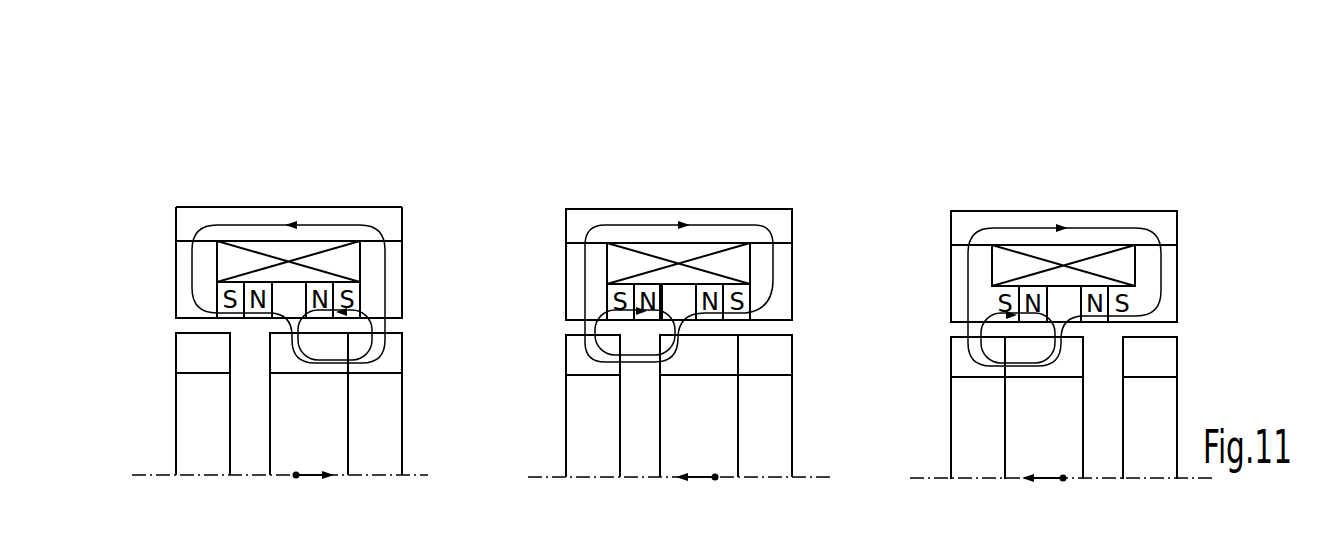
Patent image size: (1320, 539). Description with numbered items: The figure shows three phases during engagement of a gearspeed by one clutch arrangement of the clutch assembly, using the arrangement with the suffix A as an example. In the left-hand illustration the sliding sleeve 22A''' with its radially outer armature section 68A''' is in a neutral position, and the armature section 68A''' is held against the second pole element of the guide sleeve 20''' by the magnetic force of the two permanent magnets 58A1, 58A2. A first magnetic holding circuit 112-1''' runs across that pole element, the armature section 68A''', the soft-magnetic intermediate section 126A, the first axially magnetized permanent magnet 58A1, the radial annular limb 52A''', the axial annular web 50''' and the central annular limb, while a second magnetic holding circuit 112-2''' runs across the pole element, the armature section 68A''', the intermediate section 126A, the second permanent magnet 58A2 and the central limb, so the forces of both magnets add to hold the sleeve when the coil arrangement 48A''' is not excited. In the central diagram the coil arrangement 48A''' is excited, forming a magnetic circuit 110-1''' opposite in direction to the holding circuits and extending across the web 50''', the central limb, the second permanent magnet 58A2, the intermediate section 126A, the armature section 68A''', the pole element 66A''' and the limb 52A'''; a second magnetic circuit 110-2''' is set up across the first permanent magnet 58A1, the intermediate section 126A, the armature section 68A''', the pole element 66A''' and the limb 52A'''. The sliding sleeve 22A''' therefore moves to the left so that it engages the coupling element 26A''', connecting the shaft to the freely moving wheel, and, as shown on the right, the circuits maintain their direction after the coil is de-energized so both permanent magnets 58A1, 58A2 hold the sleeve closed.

The guide sleeve 20''' is at (292, 448).
The sliding sleeve 22A''' is at (266, 456).
The coupling element 26A''' is at (140, 424).
The coil arrangement 48A''' is at (284, 156).
The axial annular web 50''' is at (310, 164).
The radial annular limb 52A''' is at (148, 210).
The first axially magnetized permanent magnet 58A1 is at (637, 300).
The second axially magnetized permanent magnet 58A2 is at (718, 300).
The pole element 66A''' is at (147, 346).
The armature section 68A''' is at (382, 376).
The magnetic circuit 110-1''' is at (878, 233).
The second magnetic circuit 110-2''' is at (763, 272).
The first magnetic holding circuit 112-1''' is at (359, 292).
The second magnetic holding circuit 112-2''' is at (400, 321).
The soft-magnetic intermediate section 126A is at (287, 300).